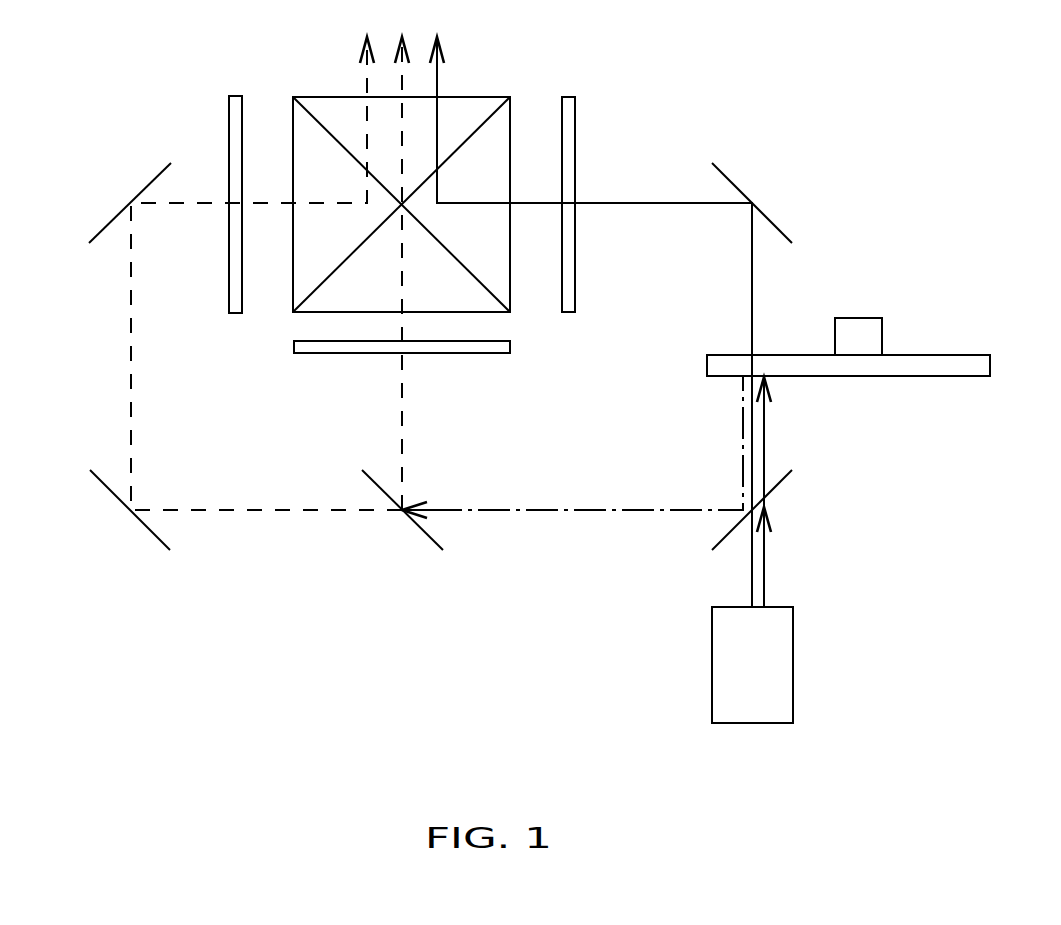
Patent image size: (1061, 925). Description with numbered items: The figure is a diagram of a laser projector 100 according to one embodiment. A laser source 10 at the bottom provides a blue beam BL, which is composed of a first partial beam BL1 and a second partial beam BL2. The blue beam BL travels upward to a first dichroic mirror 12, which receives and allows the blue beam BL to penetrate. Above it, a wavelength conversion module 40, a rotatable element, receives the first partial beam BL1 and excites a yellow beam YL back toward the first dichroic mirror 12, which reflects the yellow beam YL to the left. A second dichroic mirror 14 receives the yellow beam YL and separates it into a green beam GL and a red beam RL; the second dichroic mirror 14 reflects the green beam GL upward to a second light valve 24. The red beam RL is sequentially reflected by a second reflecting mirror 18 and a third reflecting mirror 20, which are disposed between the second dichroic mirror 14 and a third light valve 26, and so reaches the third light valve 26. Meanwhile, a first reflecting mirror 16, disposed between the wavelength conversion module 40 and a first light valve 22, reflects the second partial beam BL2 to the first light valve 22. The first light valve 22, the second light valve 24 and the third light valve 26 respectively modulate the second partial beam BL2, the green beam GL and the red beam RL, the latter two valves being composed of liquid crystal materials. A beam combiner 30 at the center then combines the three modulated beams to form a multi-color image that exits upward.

The laser projector 100 is at (898, 96).
The laser source 10 is at (793, 663).
The first dichroic mirror 12 is at (785, 480).
The second dichroic mirror 14 is at (427, 537).
The first reflecting mirror 16 is at (772, 222).
The second reflecting mirror 18 is at (110, 493).
The third reflecting mirror 20 is at (150, 187).
The first light valve 22 is at (578, 97).
The second light valve 24 is at (495, 353).
The third light valve 26 is at (229, 111).
The beam combiner 30 is at (467, 97).
The wavelength conversion module 40 is at (970, 355).
The blue beam BL is at (764, 556).
The first partial beam BL1 is at (764, 432).
The second partial beam BL2 is at (752, 278).
The green beam GL is at (402, 425).
The red beam RL is at (280, 512).
The yellow beam YL is at (595, 512).